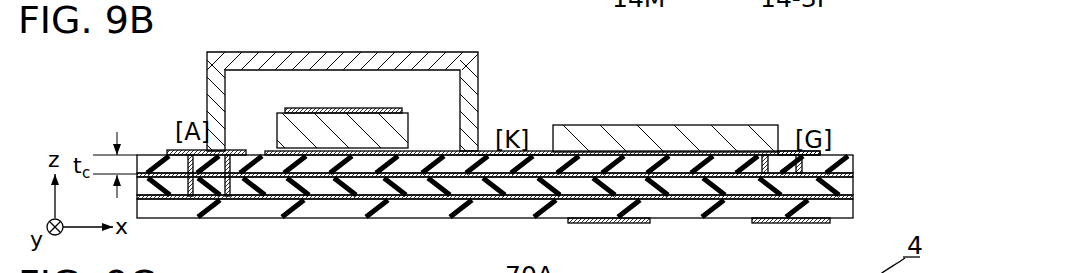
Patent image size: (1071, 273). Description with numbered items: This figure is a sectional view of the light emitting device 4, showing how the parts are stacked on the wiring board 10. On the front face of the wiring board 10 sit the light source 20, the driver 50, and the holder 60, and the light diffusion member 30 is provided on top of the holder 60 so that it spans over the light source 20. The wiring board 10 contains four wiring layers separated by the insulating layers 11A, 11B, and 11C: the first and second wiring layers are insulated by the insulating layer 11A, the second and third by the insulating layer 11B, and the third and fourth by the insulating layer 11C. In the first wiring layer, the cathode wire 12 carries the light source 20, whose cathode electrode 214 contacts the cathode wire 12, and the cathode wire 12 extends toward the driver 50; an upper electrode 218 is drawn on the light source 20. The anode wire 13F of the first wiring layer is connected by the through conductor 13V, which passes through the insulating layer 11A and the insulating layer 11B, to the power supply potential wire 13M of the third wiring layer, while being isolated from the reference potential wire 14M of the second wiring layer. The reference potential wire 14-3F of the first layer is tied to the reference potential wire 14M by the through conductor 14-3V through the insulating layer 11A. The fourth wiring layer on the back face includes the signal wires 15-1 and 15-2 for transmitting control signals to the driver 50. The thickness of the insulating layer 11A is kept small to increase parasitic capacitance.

The electronic component module 4 is at (868, 94).
The wiring board 10 is at (157, 151).
The insulating layer 11A is at (853, 158).
The insulating layer 11B is at (853, 183).
The insulating layer 11C is at (853, 209).
The cathode wire 12 is at (483, 150).
The anode wire 13F is at (182, 152).
The through conductor 13V is at (230, 190).
The power supply potential wire 13M is at (447, 200).
The reference potential wire 14M is at (525, 173).
The reference potential wire 14-3F is at (790, 151).
The through conductor 14-3V is at (798, 163).
The signal wire 15-1 is at (622, 223).
The signal wire 15-2 is at (790, 223).
The light source 20 is at (382, 106).
The light diffusion member 30 is at (337, 52).
The driver 50 is at (703, 125).
The holder 60 is at (207, 100).
The cathode electrode 214 is at (272, 150).
The component electrode 218 is at (315, 108).